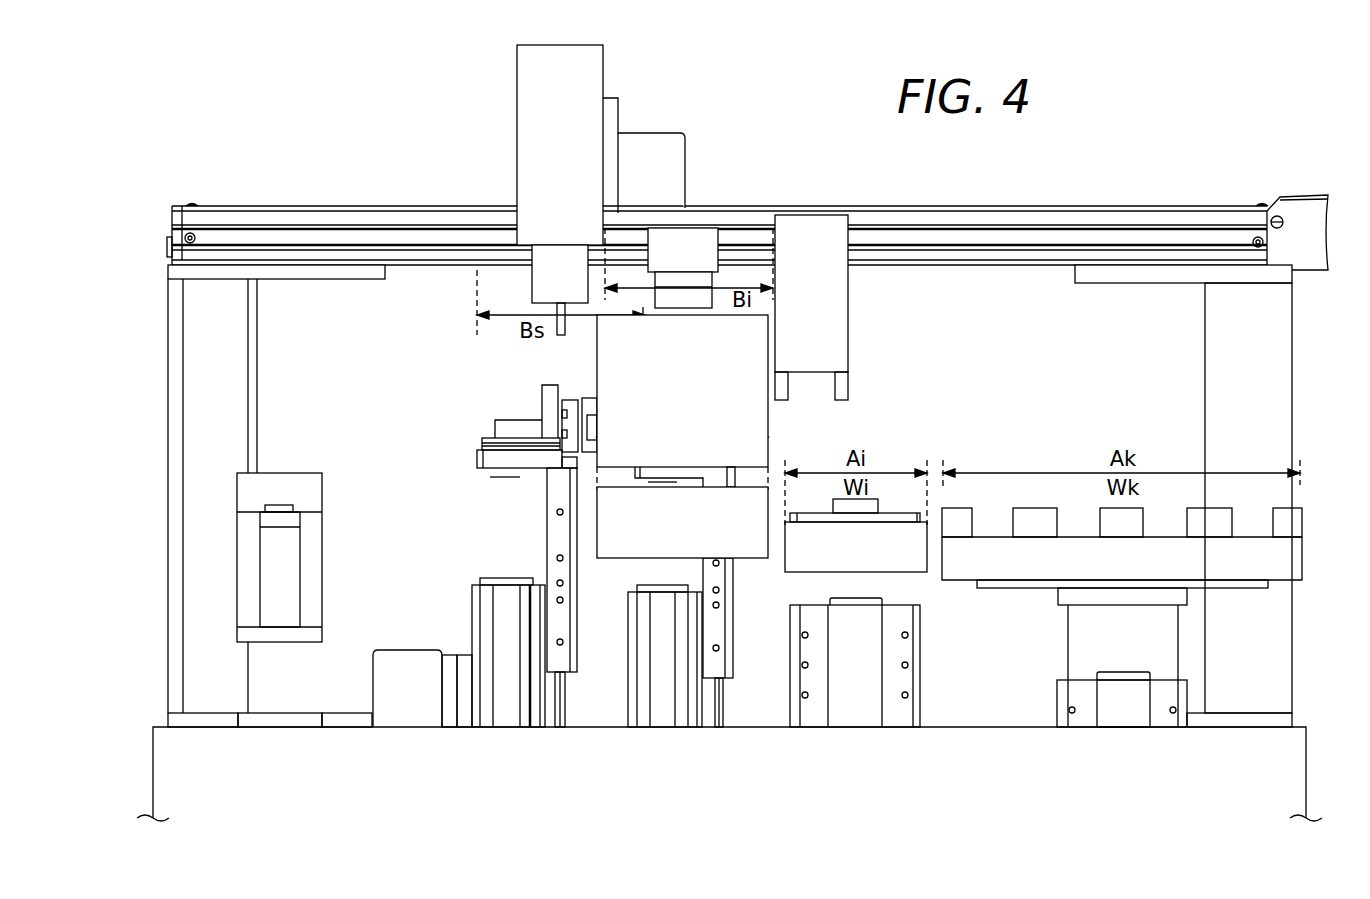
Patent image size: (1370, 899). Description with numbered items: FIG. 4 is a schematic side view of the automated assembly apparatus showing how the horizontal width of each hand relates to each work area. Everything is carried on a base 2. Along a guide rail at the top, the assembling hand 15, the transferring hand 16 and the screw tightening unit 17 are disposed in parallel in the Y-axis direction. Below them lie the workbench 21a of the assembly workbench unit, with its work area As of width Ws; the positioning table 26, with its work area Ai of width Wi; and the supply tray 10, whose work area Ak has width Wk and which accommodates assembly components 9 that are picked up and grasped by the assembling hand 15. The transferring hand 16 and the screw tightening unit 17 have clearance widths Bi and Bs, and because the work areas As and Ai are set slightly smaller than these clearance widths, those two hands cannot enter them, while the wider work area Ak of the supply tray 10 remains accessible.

The screw tightening unit 17 is at (535, 95).
The transferring hand 16 is at (700, 248).
The assembling hand 15 is at (812, 248).
The workbench 21a is at (607, 530).
The positioning table 26 is at (815, 553).
The assembly component 9 is at (1215, 523).
The supply tray 10 is at (1278, 560).
The base 2 is at (1287, 767).